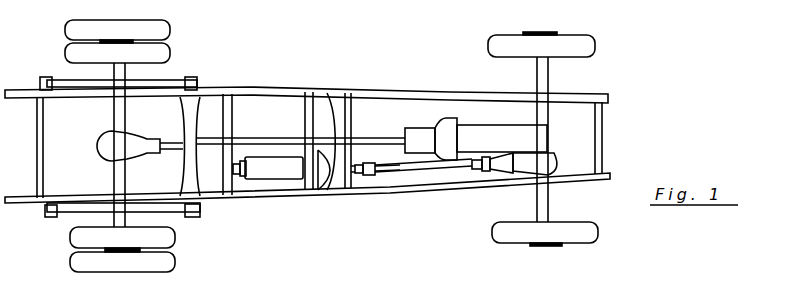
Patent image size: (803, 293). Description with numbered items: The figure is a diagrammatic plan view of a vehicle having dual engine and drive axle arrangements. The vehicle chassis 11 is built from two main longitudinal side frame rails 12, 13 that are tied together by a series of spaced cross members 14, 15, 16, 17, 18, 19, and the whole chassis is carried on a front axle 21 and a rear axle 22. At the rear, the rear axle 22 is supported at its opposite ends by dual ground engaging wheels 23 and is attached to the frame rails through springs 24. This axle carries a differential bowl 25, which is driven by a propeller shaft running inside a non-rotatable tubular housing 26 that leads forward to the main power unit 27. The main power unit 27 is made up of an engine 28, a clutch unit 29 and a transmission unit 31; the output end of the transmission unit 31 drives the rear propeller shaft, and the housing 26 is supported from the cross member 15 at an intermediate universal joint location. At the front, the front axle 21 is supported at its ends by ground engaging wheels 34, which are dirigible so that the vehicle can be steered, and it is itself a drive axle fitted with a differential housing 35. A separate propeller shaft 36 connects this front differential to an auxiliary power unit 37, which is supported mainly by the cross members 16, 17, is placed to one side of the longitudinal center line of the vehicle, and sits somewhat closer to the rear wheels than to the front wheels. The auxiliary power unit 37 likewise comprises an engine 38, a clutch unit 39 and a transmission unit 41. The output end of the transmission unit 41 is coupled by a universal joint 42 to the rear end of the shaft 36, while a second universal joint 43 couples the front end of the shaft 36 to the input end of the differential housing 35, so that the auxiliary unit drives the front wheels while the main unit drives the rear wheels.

The vehicle chassis 11 is at (409, 88).
The main longitudinal side frame rail 12 is at (277, 90).
The main longitudinal side frame rail 13 is at (301, 196).
The cross member 14 is at (599, 138).
The cross member 15 is at (344, 113).
The cross member 16 is at (308, 112).
The cross member 17 is at (228, 125).
The cross member 18 is at (190, 124).
The cross member 19 is at (40, 137).
The front axle 21 is at (541, 78).
The rear axle 22 is at (113, 70).
The dual ground engaging wheels 23 is at (160, 28).
The springs 24 is at (170, 80).
The differential bowl 25 is at (104, 148).
The tubular housing 26 is at (261, 140).
The main power unit 27 is at (468, 117).
The engine 28 is at (473, 121).
The clutch unit 29 is at (451, 115).
The transmission unit 31 is at (416, 128).
The ground engaging wheels 34 is at (572, 42).
The differential housing 35 is at (548, 160).
The propeller shaft 36 is at (437, 167).
The auxiliary power unit 37 is at (270, 183).
The engine 38 is at (238, 168).
The clutch unit 39 is at (324, 190).
The transmission unit 41 is at (352, 169).
The universal joint 42 is at (376, 173).
The universal joint 43 is at (485, 167).